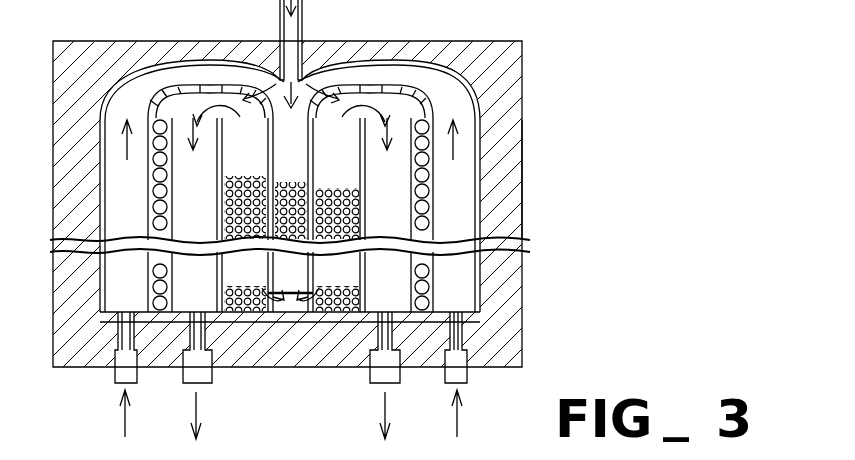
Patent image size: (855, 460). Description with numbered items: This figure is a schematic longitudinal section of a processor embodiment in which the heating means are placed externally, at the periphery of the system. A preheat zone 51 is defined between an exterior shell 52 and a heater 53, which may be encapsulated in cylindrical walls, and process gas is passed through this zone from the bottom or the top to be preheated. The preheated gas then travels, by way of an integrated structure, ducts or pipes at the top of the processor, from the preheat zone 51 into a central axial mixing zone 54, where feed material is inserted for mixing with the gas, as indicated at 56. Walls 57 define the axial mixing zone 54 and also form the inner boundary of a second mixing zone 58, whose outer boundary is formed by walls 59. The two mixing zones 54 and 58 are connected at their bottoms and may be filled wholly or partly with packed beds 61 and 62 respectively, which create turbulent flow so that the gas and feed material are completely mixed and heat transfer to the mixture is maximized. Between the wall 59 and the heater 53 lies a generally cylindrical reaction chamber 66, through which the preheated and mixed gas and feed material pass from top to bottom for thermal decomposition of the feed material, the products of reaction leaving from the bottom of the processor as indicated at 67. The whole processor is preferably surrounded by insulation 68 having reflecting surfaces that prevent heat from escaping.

The preheat zone 51 is at (462, 211).
The exterior shell 52 is at (523, 152).
The heater 53 is at (432, 262).
The central axial mixing zone 54 is at (303, 172).
The feed material insertion 56 is at (280, 32).
The walls 57 is at (269, 127).
The second mixing zone 58 is at (348, 172).
The walls 59 is at (298, 221).
The packed bed 61 is at (290, 280).
The packed bed 62 is at (247, 213).
The reaction chamber 66 is at (400, 196).
The exit of products of reaction 67 is at (383, 400).
The insulation 68 is at (523, 217).